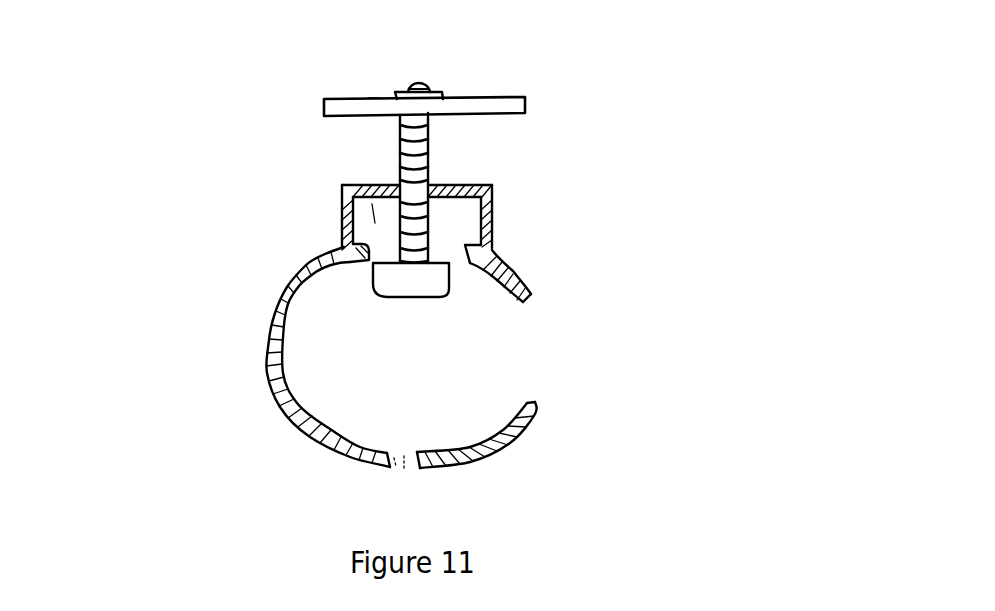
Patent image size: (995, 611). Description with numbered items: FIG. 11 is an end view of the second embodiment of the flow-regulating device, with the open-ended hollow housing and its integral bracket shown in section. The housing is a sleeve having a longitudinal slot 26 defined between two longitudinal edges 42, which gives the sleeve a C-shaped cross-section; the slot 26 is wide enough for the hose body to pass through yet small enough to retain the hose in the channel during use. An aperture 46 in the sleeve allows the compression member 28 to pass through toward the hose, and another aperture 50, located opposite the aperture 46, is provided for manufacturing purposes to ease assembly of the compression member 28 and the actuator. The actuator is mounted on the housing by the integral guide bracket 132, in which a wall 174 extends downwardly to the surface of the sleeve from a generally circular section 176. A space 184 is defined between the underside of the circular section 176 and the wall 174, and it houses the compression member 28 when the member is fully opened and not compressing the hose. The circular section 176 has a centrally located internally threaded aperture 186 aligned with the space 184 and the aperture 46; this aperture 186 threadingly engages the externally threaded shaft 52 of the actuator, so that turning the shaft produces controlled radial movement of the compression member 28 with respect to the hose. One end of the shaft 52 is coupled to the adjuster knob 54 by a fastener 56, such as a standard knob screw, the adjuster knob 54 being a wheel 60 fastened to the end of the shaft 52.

The slot 26 is at (544, 357).
The compression member 28 is at (446, 295).
The longitudinal edges 42 is at (532, 300).
The aperture 46 is at (387, 252).
The aperture 50 is at (403, 460).
The externally threaded shaft 52 is at (430, 147).
The adjuster knob 54 is at (382, 91).
The fastener 56 is at (420, 82).
The wheel 60 is at (491, 96).
The integral guide bracket 132 is at (503, 205).
The wall 174 is at (340, 222).
The circular section 176 is at (363, 187).
The space 184 is at (373, 217).
The internally threaded aperture 186 is at (430, 173).